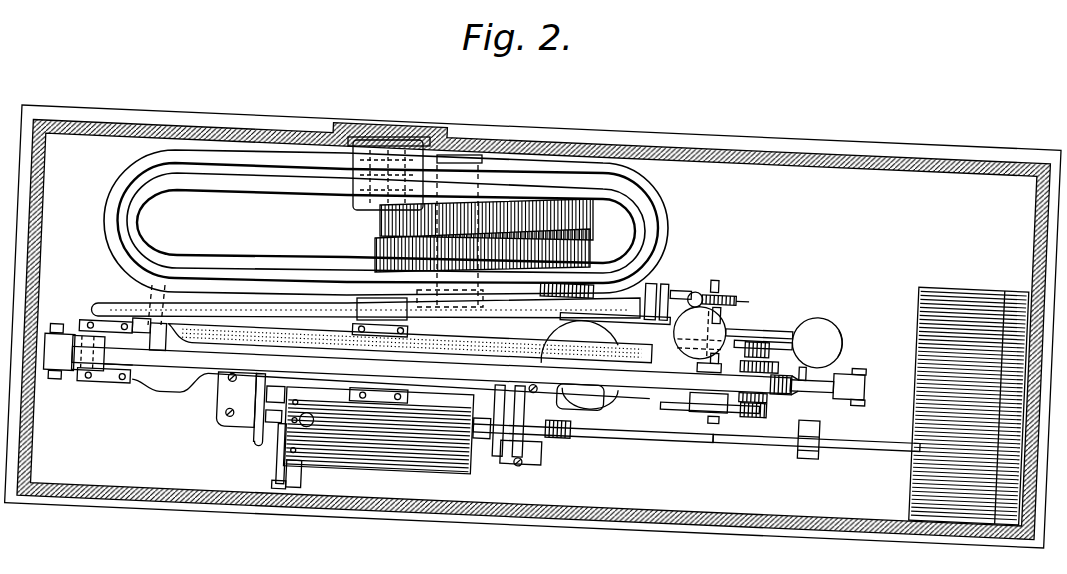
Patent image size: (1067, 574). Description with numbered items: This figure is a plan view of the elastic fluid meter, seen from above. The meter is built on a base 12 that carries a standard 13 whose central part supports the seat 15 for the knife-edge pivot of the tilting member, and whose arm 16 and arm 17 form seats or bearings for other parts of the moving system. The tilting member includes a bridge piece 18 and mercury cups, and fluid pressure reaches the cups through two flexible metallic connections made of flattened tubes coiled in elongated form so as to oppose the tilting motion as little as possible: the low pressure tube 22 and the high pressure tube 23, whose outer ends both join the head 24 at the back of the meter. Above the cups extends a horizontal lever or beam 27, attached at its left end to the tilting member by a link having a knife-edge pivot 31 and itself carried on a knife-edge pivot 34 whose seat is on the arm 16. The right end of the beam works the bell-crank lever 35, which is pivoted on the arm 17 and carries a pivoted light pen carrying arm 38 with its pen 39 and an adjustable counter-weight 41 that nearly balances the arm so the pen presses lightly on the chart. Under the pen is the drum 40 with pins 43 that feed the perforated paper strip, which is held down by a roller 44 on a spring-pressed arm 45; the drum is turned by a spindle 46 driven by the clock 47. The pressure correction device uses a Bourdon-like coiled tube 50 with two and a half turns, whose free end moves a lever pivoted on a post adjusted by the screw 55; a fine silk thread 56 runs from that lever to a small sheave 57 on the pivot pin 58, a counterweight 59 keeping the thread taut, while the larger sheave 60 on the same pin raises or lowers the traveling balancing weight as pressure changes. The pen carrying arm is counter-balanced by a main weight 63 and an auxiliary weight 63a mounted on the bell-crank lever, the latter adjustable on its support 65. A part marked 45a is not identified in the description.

The base 12 is at (533, 326).
The heat insulating lining 45a is at (788, 158).
The clock 47 is at (969, 406).
The flexible metallic connection 22 is at (128, 165).
The flexible metallic connection 23 is at (108, 253).
The coiled tube 50 is at (590, 247).
The head 24 is at (428, 138).
The arm 16 is at (116, 307).
The standard 13 is at (382, 309).
The knife-edge pivot 31 is at (60, 328).
The knife-edge pivot 34 is at (94, 325).
The seat 15 is at (360, 397).
The lever or beam 27 is at (203, 351).
The bridge piece 18 is at (211, 375).
The larger sheave or drum 60 is at (659, 367).
The drum 40 is at (371, 467).
The pen carrying arm 38 is at (440, 422).
The spindle 46 is at (869, 447).
The adjustable counter-weight 41 is at (808, 460).
The pins 43 is at (256, 400).
The pen 39 is at (300, 430).
The roller 44 is at (300, 480).
The spring-pressed arm 45 is at (272, 478).
The arm 17 is at (662, 407).
The screw 55 is at (632, 326).
The small sheave or drum 57 is at (722, 309).
The counterweight 59 is at (696, 291).
The fine silk thread 56 is at (743, 303).
The pivot pin 58 is at (718, 313).
The main weight 63 is at (768, 323).
The auxiliary weight 63a is at (848, 340).
The bell-crank lever 35 is at (795, 392).
The support 65 is at (855, 378).